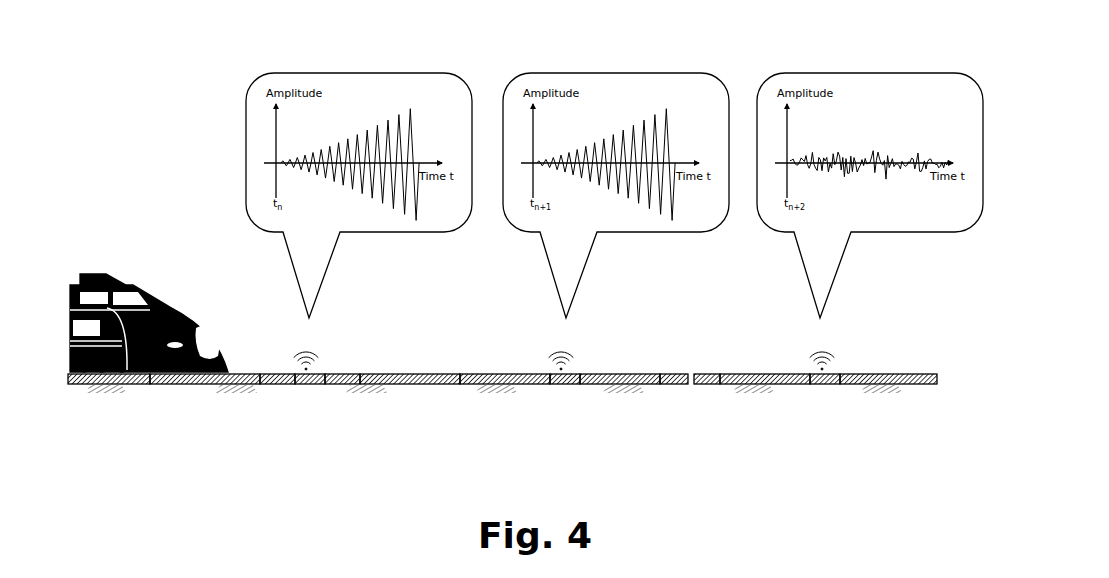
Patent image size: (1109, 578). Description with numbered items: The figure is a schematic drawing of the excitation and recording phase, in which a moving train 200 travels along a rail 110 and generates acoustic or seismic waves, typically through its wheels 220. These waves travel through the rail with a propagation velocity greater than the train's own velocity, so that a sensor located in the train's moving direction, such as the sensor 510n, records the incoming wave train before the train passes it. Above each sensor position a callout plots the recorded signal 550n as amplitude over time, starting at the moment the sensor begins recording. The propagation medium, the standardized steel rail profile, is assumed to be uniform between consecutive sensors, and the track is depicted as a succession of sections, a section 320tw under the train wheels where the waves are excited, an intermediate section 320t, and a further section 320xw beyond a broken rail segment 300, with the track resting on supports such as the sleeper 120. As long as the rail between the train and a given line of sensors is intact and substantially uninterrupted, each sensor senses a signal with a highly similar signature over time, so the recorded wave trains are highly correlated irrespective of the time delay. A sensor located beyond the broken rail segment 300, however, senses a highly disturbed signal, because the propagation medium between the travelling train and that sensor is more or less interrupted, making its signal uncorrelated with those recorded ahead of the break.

The train 200 is at (160, 303).
The sleeper under train 220 is at (129, 385).
The track section under train wheels 320tw is at (203, 387).
The rail track 110 is at (280, 386).
The track section 320t is at (412, 387).
The sleeper 120 is at (495, 388).
The rail joint 300 is at (690, 387).
The track section 320xw is at (793, 387).
The acoustic signal at sensor n 550n is at (298, 345).
The sensor position n 510n is at (313, 377).